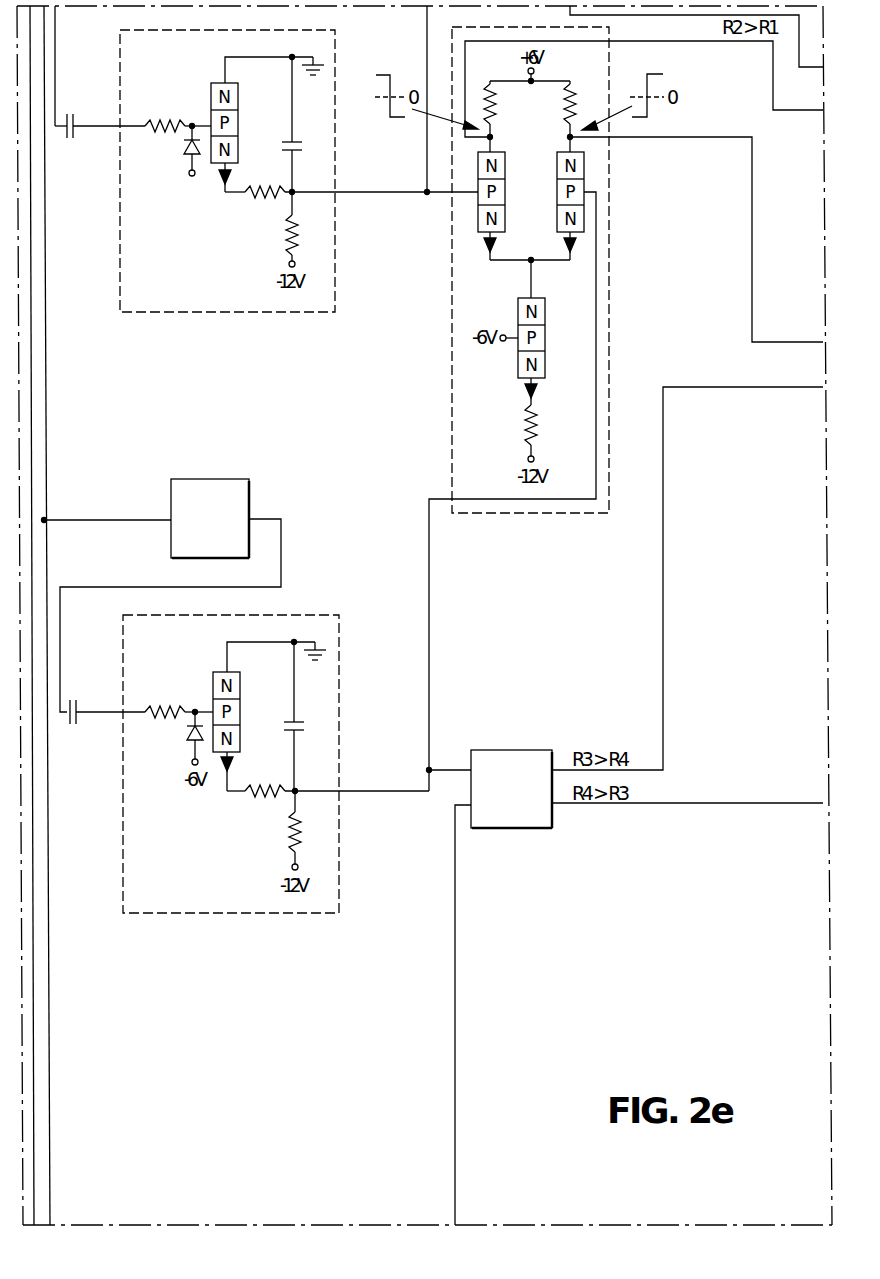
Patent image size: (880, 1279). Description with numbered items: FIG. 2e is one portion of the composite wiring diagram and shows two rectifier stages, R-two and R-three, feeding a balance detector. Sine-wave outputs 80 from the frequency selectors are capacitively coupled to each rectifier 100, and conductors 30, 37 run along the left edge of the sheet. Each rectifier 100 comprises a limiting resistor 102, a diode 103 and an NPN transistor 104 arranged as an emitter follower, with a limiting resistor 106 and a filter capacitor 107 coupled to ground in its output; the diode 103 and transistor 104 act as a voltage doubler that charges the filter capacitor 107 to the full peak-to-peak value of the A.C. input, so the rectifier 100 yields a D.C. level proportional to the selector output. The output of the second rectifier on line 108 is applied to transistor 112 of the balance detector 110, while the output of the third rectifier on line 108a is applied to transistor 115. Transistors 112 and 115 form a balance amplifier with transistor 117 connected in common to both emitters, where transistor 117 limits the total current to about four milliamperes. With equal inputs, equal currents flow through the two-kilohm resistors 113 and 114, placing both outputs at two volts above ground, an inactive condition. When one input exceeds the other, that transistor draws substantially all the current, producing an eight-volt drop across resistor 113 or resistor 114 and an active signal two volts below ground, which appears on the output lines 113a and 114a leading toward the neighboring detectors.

The conductor line 30 is at (41, 172).
The conductor line 37 is at (28, 222).
The sine-wave outputs from the selectors 80 is at (207, 479).
The rectifier 100 is at (120, 70).
The limiting resistor 102 is at (166, 119).
The diode 103 is at (184, 150).
The NPN transistor 104 is at (239, 111).
The limiting resistor 106 is at (257, 205).
The filter capacitor 107 is at (297, 141).
The line 108 is at (428, 20).
The line 108a is at (402, 793).
The balance detector 110 is at (612, 334).
The transistor 112 is at (505, 194).
The 2K resistor 113 is at (506, 116).
The output line 113a is at (804, 112).
The 2K resistor 114 is at (585, 116).
The output line 114a is at (756, 346).
The transistor 115 is at (557, 160).
The transistor 117 is at (545, 312).